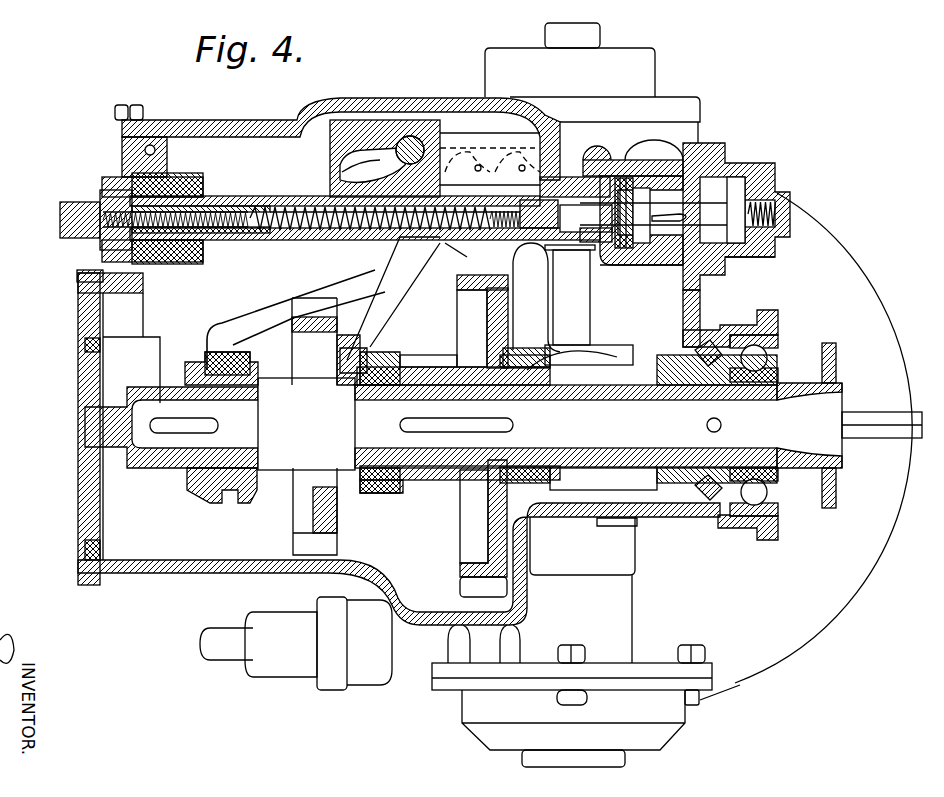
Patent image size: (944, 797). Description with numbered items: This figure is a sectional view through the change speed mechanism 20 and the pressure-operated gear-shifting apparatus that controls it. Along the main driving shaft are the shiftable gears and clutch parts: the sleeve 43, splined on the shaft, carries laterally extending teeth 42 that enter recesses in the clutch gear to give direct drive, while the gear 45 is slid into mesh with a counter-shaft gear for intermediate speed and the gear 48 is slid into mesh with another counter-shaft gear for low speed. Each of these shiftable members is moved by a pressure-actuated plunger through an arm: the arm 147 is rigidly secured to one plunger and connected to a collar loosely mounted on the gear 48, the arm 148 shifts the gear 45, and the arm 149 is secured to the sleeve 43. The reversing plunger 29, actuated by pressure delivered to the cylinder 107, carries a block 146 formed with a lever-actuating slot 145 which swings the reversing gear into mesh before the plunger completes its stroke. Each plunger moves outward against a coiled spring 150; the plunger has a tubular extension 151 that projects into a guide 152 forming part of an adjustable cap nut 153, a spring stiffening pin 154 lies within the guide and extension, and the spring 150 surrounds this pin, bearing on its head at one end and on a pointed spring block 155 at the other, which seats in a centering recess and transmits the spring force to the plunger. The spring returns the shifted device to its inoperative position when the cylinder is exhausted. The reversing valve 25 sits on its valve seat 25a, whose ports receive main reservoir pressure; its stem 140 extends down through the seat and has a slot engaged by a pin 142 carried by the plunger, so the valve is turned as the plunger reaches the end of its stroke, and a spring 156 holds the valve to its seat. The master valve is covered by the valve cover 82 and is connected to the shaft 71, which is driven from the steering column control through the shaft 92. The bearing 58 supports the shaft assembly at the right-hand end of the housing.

The valve cover 82 is at (592, 83).
The block 146 is at (410, 128).
The lever-actuating slot 145 is at (358, 177).
The spring stiffening pin 154 is at (164, 212).
The guide 152 is at (218, 197).
The coiled spring 150 is at (288, 184).
The spring block 155 is at (540, 214).
The tubular extension 151 is at (292, 238).
The cap nut 153 is at (62, 212).
The reversing valve 25 is at (737, 185).
The spring 156 is at (772, 193).
The plunger 29 is at (640, 192).
The stem 140 is at (662, 210).
The cylinder 107 is at (665, 222).
The pin 142 is at (656, 246).
The valve seat 25a is at (735, 268).
The change speed mechanism 20 is at (455, 498).
The teeth 42 is at (200, 370).
The sleeve 43 is at (246, 478).
The gear 45 is at (322, 343).
The gear 48 is at (492, 322).
The arm 148 is at (393, 292).
The arm 149 is at (268, 310).
The arm 147 is at (530, 279).
The shaft 71 is at (575, 302).
The bearing 58 is at (684, 488).
The shaft 92 is at (227, 633).